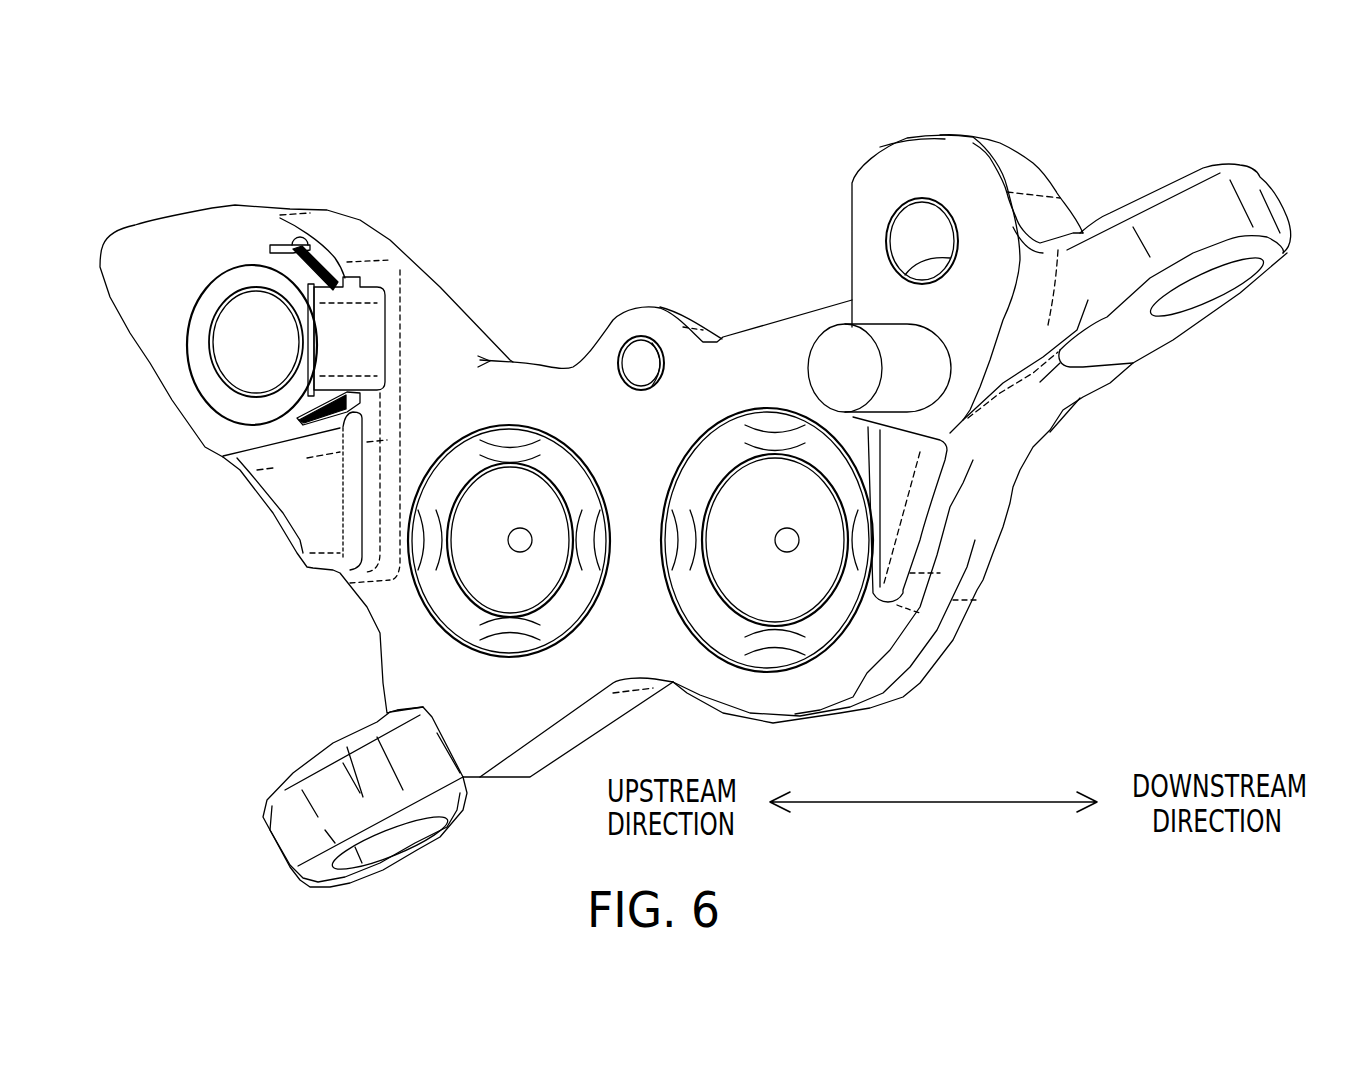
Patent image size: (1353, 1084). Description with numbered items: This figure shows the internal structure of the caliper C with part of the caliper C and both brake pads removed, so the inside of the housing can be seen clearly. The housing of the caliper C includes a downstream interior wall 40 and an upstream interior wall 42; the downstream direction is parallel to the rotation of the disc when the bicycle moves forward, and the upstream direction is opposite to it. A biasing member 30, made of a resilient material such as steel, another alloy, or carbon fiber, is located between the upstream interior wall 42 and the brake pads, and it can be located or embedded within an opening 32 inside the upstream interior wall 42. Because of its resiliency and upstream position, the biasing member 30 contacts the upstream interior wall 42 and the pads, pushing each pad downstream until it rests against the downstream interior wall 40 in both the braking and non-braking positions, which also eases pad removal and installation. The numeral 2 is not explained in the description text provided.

The mounting lug 2 is at (285, 780).
The biasing member 30 is at (360, 340).
The opening 32 is at (293, 241).
The downstream interior wall 40 is at (852, 265).
The upstream interior wall 42 is at (367, 442).
The caliper C is at (898, 140).